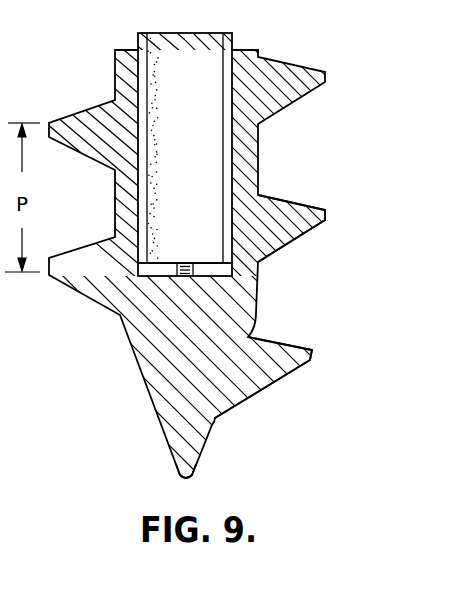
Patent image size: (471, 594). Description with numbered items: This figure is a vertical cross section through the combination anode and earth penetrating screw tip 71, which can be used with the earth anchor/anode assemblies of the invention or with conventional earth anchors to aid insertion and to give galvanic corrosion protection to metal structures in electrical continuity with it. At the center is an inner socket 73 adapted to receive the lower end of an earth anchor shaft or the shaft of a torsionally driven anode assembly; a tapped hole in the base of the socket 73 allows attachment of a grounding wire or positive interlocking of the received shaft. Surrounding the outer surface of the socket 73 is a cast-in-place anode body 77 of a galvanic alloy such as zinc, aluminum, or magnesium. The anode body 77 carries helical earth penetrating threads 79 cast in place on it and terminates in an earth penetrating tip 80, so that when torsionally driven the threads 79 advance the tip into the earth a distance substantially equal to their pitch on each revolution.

The combination anode/earth anchor screw tip 71 is at (288, 132).
The inner socket 73 is at (181, 60).
The cast-in-place anode body 77 is at (232, 300).
The helical earth penetrating threads 79 is at (276, 203).
The earth penetrating tip 80 is at (189, 479).